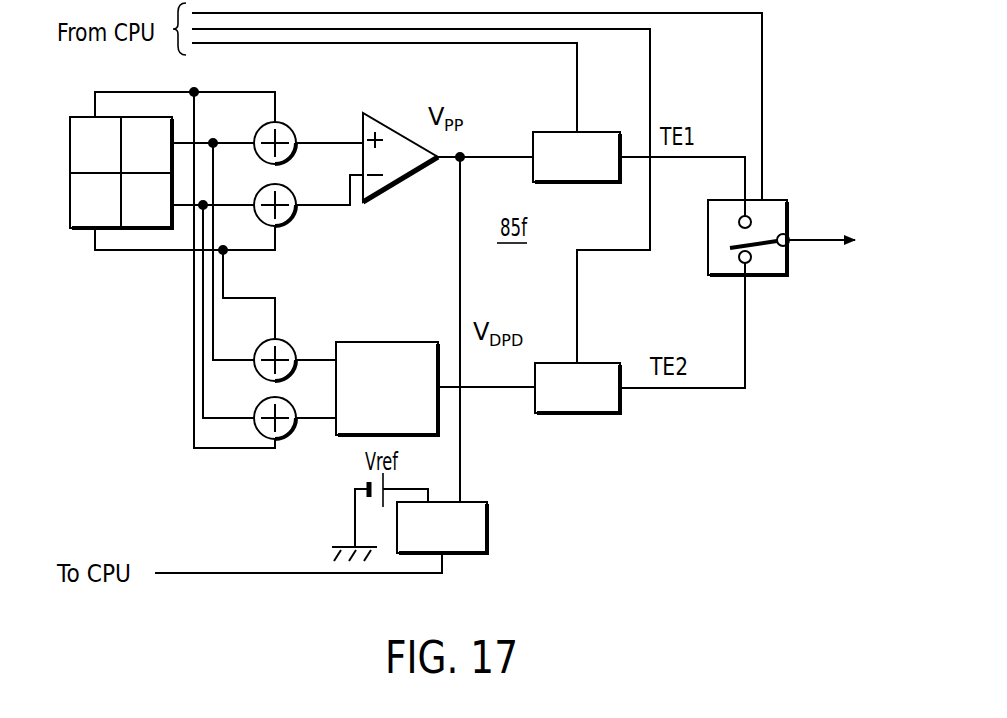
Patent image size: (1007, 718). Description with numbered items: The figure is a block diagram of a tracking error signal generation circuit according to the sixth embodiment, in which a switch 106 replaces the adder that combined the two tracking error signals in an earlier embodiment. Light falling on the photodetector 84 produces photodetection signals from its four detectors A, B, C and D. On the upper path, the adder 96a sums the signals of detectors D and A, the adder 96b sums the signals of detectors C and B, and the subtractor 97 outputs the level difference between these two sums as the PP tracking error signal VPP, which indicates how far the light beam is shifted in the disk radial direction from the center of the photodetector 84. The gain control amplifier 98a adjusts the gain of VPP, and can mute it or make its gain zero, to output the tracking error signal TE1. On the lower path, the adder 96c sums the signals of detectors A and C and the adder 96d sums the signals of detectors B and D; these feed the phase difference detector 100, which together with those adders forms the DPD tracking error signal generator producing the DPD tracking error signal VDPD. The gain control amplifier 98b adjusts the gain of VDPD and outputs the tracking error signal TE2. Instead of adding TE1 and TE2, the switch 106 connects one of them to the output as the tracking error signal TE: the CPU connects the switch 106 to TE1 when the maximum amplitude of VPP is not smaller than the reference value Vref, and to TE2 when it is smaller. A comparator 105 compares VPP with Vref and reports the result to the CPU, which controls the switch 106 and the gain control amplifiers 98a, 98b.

The photodetector 84 is at (75, 246).
The adder 96a is at (294, 129).
The adder 96b is at (291, 219).
The adder 96c is at (292, 346).
The adder 96d is at (288, 437).
The subtractor 97 is at (399, 180).
The gain control amplifier 98a is at (609, 131).
The gain control amplifier 98b is at (604, 362).
The phase difference detector 100 is at (398, 342).
The comparator 105 is at (490, 527).
The switch 106 is at (785, 198).